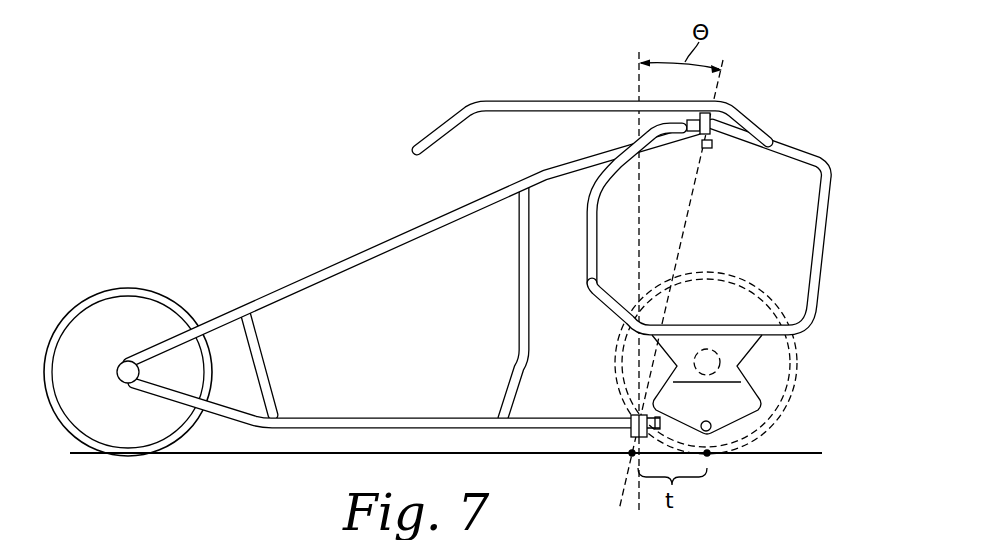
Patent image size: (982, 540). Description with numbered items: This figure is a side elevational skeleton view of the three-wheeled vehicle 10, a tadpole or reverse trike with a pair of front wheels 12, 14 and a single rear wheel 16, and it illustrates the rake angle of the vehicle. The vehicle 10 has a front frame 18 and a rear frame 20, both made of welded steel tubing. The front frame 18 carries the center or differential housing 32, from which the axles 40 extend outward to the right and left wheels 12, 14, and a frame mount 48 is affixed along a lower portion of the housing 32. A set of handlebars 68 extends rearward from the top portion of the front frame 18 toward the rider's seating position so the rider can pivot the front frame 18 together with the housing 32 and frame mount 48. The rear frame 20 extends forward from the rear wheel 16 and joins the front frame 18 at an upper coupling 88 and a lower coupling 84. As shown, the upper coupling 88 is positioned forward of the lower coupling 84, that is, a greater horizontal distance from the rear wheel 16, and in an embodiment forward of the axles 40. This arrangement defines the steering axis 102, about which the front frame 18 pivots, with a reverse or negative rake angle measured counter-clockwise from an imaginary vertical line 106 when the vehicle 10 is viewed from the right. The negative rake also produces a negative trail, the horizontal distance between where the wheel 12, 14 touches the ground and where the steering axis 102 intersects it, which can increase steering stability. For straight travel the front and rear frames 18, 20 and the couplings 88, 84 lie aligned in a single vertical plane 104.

The vehicle 10 is at (303, 97).
The front wheel 12 is at (742, 363).
The front wheel 14 is at (795, 385).
The rear wheel 16 is at (90, 297).
The front frame 18 is at (820, 168).
The rear frame 20 is at (363, 253).
The differential housing 32 is at (773, 403).
The axles 40 is at (712, 348).
The frame mount 48 is at (727, 417).
The handlebars 68 is at (552, 103).
The lower coupling 84 is at (620, 444).
The upper coupling 88 is at (722, 126).
The steering axis 102 is at (717, 85).
The vertical plane 104 is at (631, 457).
The vertical line 106 is at (639, 80).